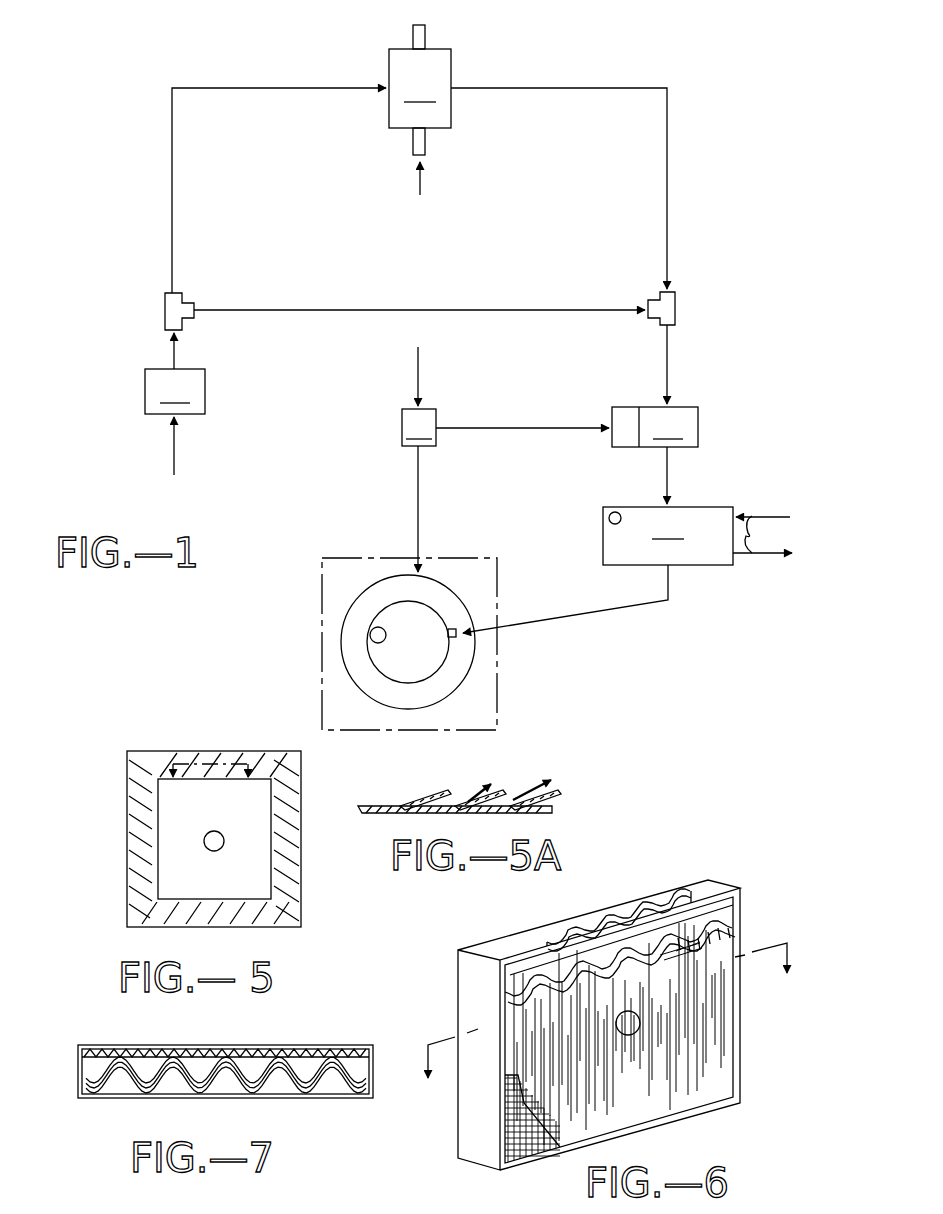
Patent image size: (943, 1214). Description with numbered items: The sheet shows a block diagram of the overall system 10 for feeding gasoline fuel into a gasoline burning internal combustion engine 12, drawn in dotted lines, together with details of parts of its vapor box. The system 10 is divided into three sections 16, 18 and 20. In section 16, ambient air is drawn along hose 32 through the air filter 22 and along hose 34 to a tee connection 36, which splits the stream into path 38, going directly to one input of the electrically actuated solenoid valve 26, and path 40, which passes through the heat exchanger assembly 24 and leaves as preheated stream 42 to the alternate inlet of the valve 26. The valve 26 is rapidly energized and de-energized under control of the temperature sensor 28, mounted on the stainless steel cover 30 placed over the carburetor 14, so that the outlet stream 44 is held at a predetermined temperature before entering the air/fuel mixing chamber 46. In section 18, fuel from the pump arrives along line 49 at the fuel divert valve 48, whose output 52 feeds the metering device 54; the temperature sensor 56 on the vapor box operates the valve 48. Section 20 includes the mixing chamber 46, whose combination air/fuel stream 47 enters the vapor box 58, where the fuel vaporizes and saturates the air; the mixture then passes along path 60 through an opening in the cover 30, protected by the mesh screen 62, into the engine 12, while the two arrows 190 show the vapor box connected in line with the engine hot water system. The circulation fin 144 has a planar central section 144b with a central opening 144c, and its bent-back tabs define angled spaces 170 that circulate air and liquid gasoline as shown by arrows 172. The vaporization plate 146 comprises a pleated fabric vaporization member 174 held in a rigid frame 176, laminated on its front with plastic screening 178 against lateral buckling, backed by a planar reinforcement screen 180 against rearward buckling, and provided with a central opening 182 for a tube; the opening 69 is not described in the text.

In FIG. 1, the system 10 is at (674, 50).
In FIG. 1, the engine 12 is at (365, 558).
In FIG. 1, the carburetor 14 is at (356, 660).
In FIG. 1, the section 16 is at (141, 315).
In FIG. 1, the section 18 is at (600, 397).
In FIG. 1, the section 20 is at (705, 592).
In FIG. 1, the air filter 22 is at (175, 391).
In FIG. 1, the heat exchanger assembly 24 is at (420, 110).
In FIG. 1, the solenoid valve 26 is at (676, 310).
In FIG. 1, the temperature sensor 28 is at (370, 635).
In FIG. 1, the stainless steel cover 30 is at (426, 660).
In FIG. 1, the arrow 32 is at (174, 446).
In FIG. 1, the arrow 34 is at (174, 352).
In FIG. 1, the tee connection 36 is at (165, 302).
In FIG. 1, the arrow 38 is at (476, 302).
In FIG. 1, the arrow 40 is at (172, 208).
In FIG. 1, the arrow 42 is at (667, 220).
In FIG. 1, the arrow 44 is at (668, 377).
In FIG. 1, the air/fuel mixing chamber 46 is at (655, 427).
In FIG. 1, the arrow 47 is at (667, 475).
In FIG. 1, the fuel divert valve 48 is at (419, 427).
In FIG. 1, the arrow 49 is at (418, 376).
In FIG. 1, the arrow 52 is at (533, 426).
In FIG. 1, the metering device 54 is at (622, 438).
In FIG. 1, the temperature sensor 56 is at (609, 518).
In FIG. 1, the vapor box 58 is at (668, 536).
In FIG. 1, the arrow 60 is at (572, 617).
In FIG. 1, the mesh screen 62 is at (456, 628).
In FIG. 5, the filter frame opening 69 is at (292, 773).
In FIG. 5, the circulation fin 144 is at (189, 810).
In FIG. 5, the central section 144b is at (241, 892).
In FIG. 5, the central opening 144c is at (216, 832).
In FIG. 6, the vaporization plate 146 is at (581, 1004).
In FIG. 5A, the angled spaces 170 is at (422, 804).
In FIG. 5A, the arrows 172 is at (468, 794).
In FIG. 7, the vaporization member 174 is at (190, 1050).
In FIG. 6, the vaporization member 174 is at (614, 905).
In FIG. 7, the rigid frame 176 is at (285, 1100).
In FIG. 6, the rigid frame 176 is at (465, 984).
In FIG. 7, the plastic screening 178 is at (162, 1088).
In FIG. 6, the plastic screening 178 is at (722, 940).
In FIG. 7, the reinforcement screen 180 is at (280, 1050).
In FIG. 6, the reinforcement screen 180 is at (530, 1140).
In FIG. 6, the central opening 182 is at (634, 1028).
In FIG. 1, the arrows 190 is at (764, 534).